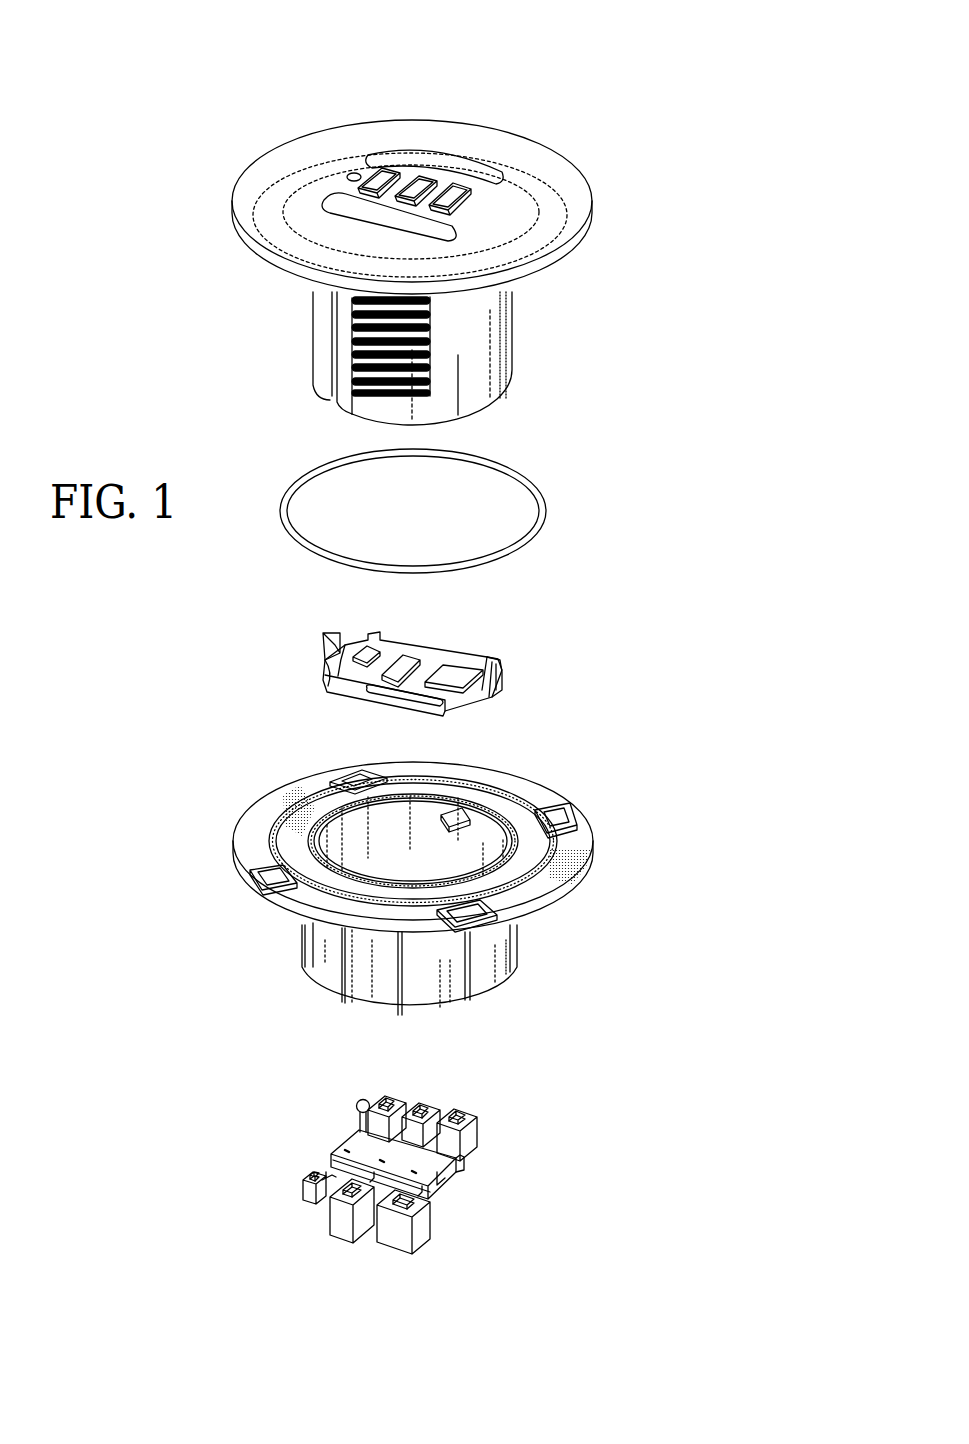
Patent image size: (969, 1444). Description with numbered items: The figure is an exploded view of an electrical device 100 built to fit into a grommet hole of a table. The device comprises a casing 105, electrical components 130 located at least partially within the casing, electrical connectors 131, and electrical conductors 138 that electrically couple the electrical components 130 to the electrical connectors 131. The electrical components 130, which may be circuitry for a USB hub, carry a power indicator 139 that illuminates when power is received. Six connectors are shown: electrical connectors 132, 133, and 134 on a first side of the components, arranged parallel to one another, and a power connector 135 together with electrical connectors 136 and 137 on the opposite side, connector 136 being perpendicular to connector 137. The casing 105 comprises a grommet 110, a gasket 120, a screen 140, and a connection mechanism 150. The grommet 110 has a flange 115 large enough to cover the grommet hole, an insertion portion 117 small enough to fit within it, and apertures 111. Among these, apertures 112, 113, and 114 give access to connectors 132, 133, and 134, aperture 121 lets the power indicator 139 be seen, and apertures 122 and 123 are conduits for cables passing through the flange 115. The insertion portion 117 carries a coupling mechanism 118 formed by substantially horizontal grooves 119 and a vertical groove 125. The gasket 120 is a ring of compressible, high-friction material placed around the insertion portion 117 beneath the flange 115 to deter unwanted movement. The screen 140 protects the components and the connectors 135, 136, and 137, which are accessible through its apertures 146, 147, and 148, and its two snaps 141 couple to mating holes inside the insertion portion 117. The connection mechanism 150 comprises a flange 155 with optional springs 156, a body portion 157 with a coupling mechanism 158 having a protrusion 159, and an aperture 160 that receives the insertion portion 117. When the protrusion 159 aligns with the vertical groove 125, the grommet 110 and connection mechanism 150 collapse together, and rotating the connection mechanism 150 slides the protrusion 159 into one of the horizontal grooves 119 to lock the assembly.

The electrical device 100 is at (717, 745).
The casing 105 is at (159, 186).
The grommet 110 is at (550, 303).
The apertures 111 is at (627, 86).
The aperture 112 is at (382, 168).
The aperture 113 is at (470, 165).
The aperture 114 is at (490, 183).
The flange 115 is at (572, 187).
The insertion portion 117 is at (497, 360).
The coupling mechanism 118 is at (333, 350).
The horizontal grooves 119 is at (357, 365).
The gasket 120 is at (546, 509).
The aperture 121 is at (352, 172).
The aperture 122 is at (430, 190).
The aperture 123 is at (418, 185).
The vertical groove 125 is at (343, 312).
The electrical components 130 is at (447, 1177).
The electrical connectors 131 is at (540, 1085).
The electrical connector 132 is at (388, 1108).
The electrical connector 133 is at (426, 1112).
The electrical connector 134 is at (464, 1118).
The power connector 135 is at (307, 1203).
The electrical connector 136 is at (345, 1225).
The electrical connector 137 is at (398, 1228).
The electrical conductors 138 is at (467, 1148).
The power indicator 139 is at (364, 1098).
The screen 140 is at (510, 655).
The snaps 141 is at (500, 675).
The aperture 146 is at (357, 652).
The aperture 147 is at (410, 659).
The aperture 148 is at (457, 672).
The connection mechanism 150 is at (615, 863).
The flange 155 is at (578, 840).
The springs 156 is at (498, 930).
The body portion 157 is at (490, 992).
The coupling mechanism 158 is at (393, 826).
The protrusion 159 is at (463, 813).
The aperture 160 is at (400, 877).